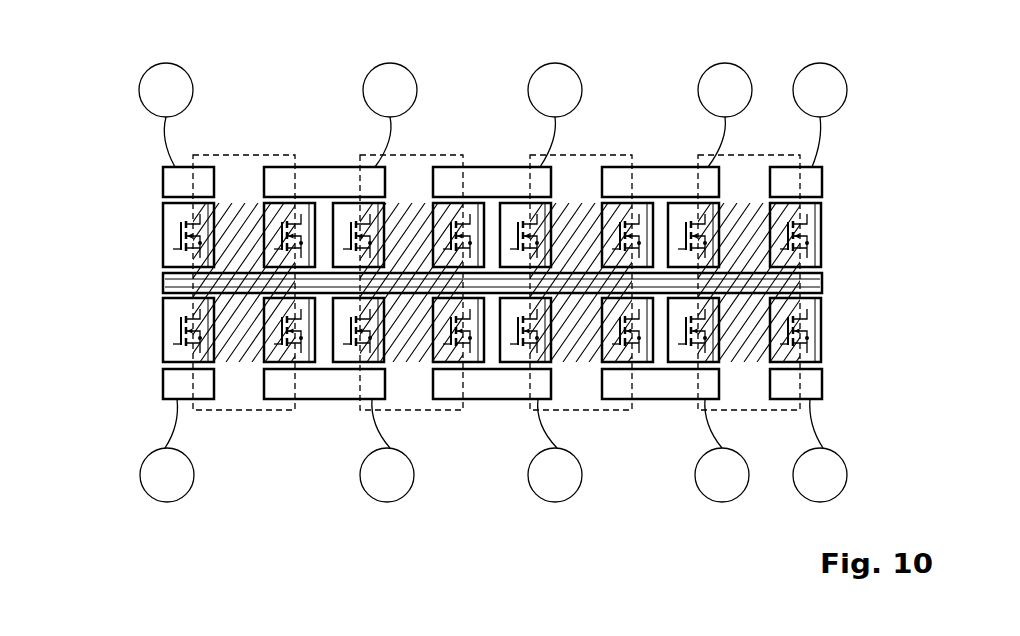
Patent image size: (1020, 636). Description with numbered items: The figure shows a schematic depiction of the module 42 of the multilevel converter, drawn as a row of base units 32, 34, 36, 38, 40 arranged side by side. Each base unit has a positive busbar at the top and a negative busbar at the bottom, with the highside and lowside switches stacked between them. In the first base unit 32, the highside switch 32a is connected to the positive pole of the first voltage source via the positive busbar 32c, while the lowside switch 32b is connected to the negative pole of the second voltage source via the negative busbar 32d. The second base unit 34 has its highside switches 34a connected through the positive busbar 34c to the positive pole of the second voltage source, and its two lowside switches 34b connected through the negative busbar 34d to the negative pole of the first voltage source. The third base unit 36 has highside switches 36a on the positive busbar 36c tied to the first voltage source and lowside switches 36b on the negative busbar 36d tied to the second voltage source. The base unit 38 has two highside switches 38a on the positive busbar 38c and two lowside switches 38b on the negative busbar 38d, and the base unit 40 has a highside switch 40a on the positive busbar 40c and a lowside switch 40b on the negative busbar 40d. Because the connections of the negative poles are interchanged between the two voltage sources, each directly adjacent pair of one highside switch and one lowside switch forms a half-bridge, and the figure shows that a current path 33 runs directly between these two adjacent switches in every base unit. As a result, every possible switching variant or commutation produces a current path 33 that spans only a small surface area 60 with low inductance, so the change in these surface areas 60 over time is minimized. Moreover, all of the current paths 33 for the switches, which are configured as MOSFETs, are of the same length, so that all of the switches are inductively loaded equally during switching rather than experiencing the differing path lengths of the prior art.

The first base unit 32 is at (208, 88).
The highside switch 32a is at (163, 232).
The lowside switch 32b is at (163, 330).
The positive busbar 32c is at (173, 183).
The negative busbar 32d is at (170, 383).
The current path 33 is at (173, 280).
The second base unit 34 is at (350, 88).
The highside switches 34a is at (285, 203).
The lowside switches 34b is at (277, 362).
The positive busbar 34c is at (322, 178).
The negative busbar 34d is at (317, 392).
The third base unit 36 is at (513, 88).
The highside switches 36a is at (443, 203).
The lowside switches 36b is at (443, 362).
The positive busbar 36c is at (480, 178).
The negative busbar 36d is at (478, 392).
The base unit 38 is at (686, 88).
The highside switches 38a is at (612, 203).
The lowside switches 38b is at (612, 362).
The positive busbar 38c is at (655, 178).
The negative busbar 38d is at (650, 392).
The base unit 40 is at (852, 118).
The highside switch 40a is at (823, 233).
The lowside switch 40b is at (823, 328).
The positive busbar 40c is at (810, 182).
The negative busbar 40d is at (813, 383).
The module 42 is at (85, 104).
The spanned surface area 60 is at (237, 155).